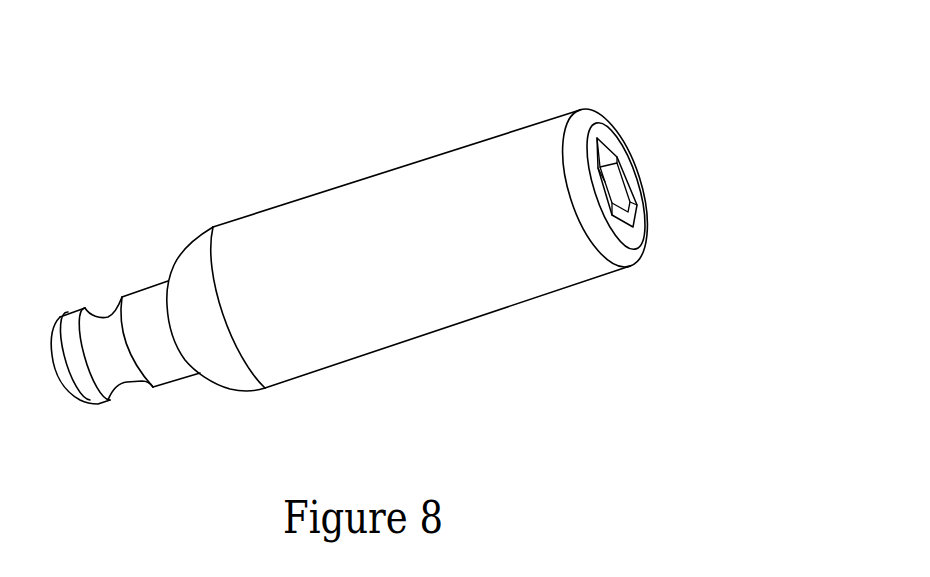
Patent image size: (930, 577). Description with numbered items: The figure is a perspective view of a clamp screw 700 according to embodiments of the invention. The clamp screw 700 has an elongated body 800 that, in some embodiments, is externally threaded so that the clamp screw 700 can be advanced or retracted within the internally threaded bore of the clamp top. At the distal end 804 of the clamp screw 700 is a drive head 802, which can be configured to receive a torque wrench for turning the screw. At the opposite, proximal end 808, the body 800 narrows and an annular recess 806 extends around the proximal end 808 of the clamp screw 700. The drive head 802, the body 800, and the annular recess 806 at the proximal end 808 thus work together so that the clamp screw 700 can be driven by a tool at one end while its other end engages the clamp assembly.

The clamp screw 700 is at (362, 118).
The body 800 is at (473, 295).
The drive head 802 is at (622, 183).
The distal end 804 is at (570, 114).
The annular recess 806 is at (100, 319).
The proximal end 808 is at (111, 400).